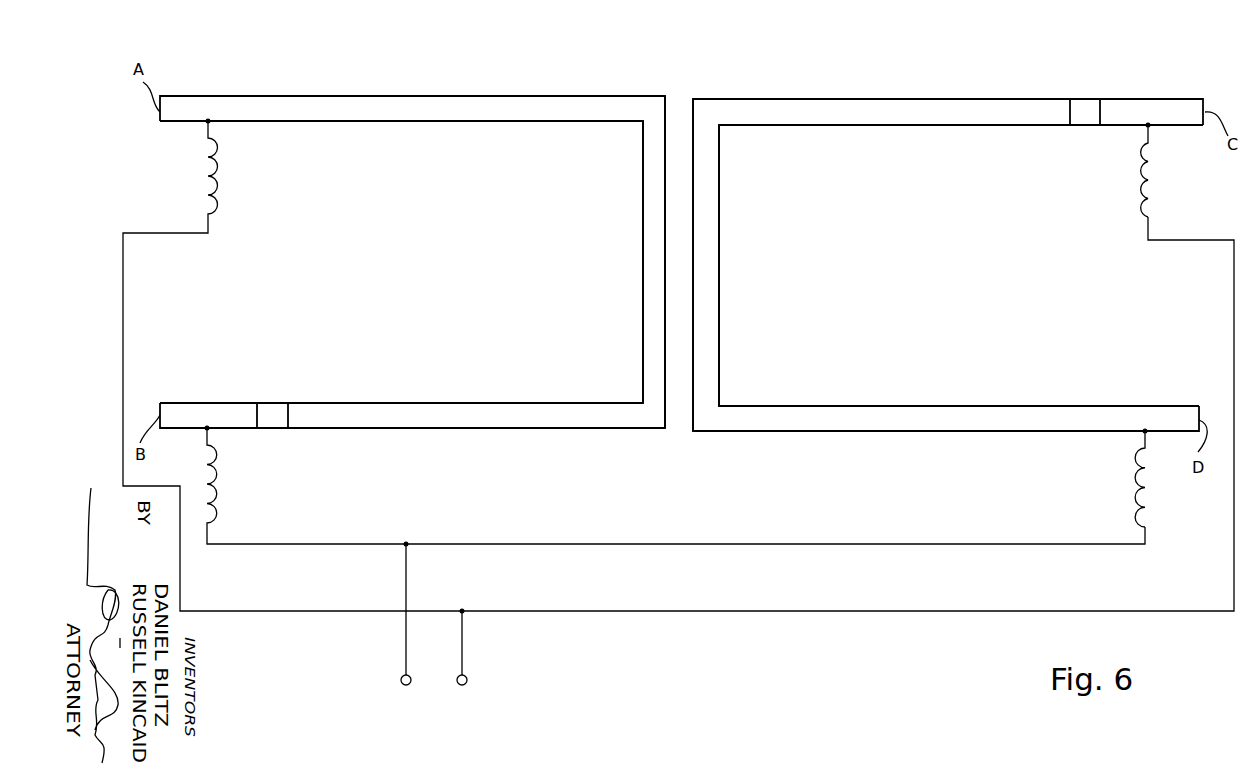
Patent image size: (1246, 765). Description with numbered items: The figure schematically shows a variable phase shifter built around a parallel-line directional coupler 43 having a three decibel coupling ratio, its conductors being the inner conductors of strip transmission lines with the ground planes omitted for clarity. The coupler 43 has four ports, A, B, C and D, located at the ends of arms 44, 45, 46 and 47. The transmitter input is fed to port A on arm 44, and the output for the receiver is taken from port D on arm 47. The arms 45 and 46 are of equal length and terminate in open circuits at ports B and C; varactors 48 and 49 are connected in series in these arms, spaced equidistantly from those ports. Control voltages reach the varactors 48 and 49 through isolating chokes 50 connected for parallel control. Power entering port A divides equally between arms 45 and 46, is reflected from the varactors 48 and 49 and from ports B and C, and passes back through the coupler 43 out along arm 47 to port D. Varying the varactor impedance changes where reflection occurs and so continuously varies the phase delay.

The parallel-line directional coupler 43 is at (682, 88).
The arm 44 is at (401, 108).
The arm 45 is at (440, 420).
The arm 46 is at (933, 110).
The arm 47 is at (905, 420).
The varactor 48 is at (270, 414).
The varactor 49 is at (1082, 112).
The isolating choke 50 is at (219, 205).